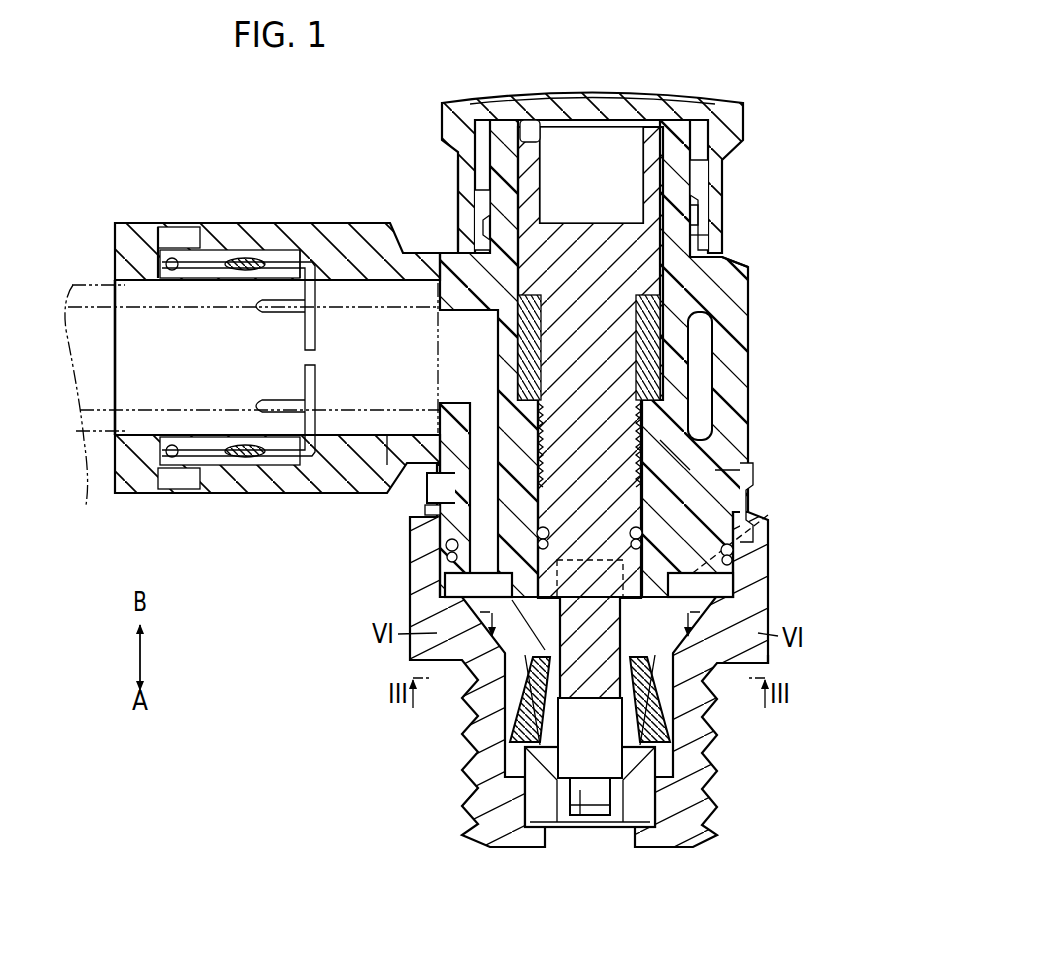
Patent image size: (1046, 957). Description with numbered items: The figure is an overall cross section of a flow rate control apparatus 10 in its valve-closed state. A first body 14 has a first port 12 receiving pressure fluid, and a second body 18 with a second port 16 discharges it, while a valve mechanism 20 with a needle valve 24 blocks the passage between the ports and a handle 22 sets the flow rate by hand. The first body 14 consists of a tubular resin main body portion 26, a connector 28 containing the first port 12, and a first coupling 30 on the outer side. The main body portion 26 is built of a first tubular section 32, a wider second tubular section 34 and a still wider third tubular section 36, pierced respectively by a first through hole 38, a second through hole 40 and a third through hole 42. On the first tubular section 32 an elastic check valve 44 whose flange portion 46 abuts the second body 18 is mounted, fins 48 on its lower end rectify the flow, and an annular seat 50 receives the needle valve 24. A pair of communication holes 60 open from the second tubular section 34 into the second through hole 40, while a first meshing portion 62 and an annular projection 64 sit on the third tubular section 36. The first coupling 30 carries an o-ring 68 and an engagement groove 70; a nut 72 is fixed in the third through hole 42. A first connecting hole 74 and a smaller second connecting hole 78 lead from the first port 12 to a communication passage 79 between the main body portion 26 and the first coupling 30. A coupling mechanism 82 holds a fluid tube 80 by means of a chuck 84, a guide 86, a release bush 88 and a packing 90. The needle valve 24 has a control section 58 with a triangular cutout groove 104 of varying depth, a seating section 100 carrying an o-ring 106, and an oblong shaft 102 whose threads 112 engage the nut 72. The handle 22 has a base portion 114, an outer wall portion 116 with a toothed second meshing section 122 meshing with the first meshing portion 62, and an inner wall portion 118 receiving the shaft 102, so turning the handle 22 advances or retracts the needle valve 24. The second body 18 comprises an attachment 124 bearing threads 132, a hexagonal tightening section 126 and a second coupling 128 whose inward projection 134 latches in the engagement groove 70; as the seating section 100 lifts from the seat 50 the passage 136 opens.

The flow rate control apparatus 10 is at (350, 114).
The first port 12 is at (276, 234).
The first body 14 is at (751, 323).
The second port 16 is at (555, 840).
The second body 18 is at (464, 769).
The valve mechanism 20 is at (722, 500).
The handle 22 is at (663, 87).
The needle valve 24 is at (530, 415).
The main body portion 26 is at (665, 460).
The connector 28 is at (185, 492).
The first coupling 30 is at (430, 506).
The first tubular section 32 is at (540, 705).
The second tubular section 34 is at (525, 620).
The third tubular section 36 is at (690, 243).
The first through hole 38 is at (581, 792).
The second through hole 40 is at (690, 425).
The third through hole 42 is at (527, 140).
The check valve 44 is at (650, 745).
The flange portion 46 is at (680, 728).
The fins 48 is at (640, 822).
The seat 50 is at (702, 597).
The control section 58 is at (590, 738).
The communication holes 60 is at (772, 515).
The first meshing portion 62 is at (704, 178).
The projection 64 is at (700, 215).
The o-ring 68 is at (452, 562).
The engagement groove 70 is at (746, 500).
The nut 72 is at (656, 366).
The first connecting hole 74 is at (393, 286).
The second connecting hole 78 is at (456, 313).
The communication passage 79 is at (460, 447).
The fluid tube 80 is at (81, 512).
The coupling mechanism 82 is at (140, 206).
The chuck 84 is at (250, 446).
The guide 86 is at (195, 272).
The release bush 88 is at (118, 250).
The packing 90 is at (332, 262).
The seating section 100 is at (463, 600).
The shaft 102 is at (668, 272).
The cutout groove 104 is at (598, 720).
The o-ring 106 is at (460, 545).
The threads 112 is at (712, 386).
The base portion 114 is at (537, 100).
The outer wall portion 116 is at (465, 172).
The inner wall portion 118 is at (562, 180).
The second meshing section 122 is at (478, 243).
The attachment 124 is at (762, 556).
The tightening section 126 is at (766, 664).
The second coupling 128 is at (376, 427).
The threads 132 is at (465, 810).
The projection 134 is at (440, 520).
The passage 136 is at (553, 700).